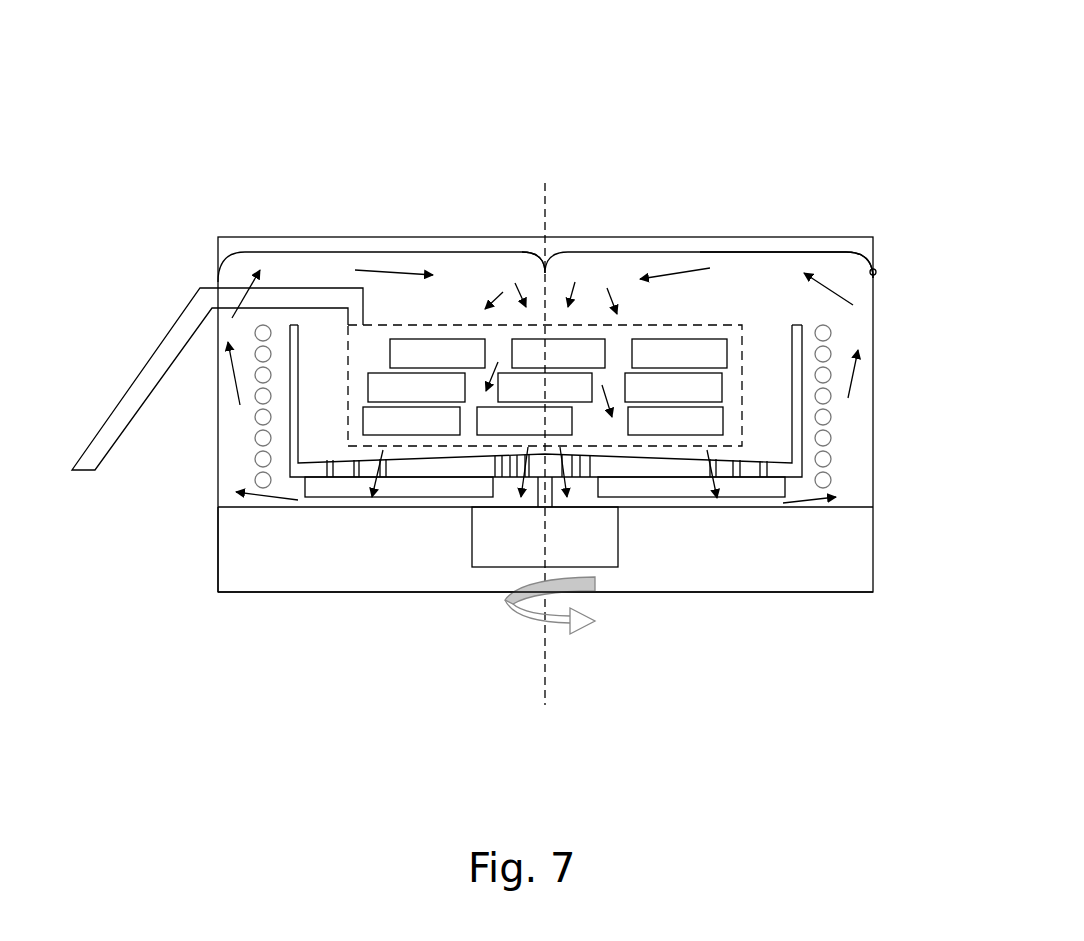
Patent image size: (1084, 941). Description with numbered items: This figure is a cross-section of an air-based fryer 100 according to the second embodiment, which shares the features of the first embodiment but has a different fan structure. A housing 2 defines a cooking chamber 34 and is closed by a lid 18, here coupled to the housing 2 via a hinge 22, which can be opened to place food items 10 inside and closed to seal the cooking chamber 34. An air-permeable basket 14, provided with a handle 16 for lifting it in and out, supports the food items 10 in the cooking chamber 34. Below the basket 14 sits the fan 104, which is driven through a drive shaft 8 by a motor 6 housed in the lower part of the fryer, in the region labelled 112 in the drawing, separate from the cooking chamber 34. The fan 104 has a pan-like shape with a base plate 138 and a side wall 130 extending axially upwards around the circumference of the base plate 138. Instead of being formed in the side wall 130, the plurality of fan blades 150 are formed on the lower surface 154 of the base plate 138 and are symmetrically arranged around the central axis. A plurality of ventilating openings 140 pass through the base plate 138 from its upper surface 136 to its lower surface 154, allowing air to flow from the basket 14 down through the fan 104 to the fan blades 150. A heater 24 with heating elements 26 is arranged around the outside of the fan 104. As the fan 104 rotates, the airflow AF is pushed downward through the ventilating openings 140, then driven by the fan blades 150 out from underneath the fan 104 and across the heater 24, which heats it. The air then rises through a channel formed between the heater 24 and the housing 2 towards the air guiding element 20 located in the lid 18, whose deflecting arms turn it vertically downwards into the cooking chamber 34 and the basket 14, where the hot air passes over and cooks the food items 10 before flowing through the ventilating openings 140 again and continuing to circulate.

The air-based fryer 100 is at (290, 98).
The housing 2 is at (873, 357).
The motor 6 is at (602, 568).
The drive shaft 8 is at (545, 492).
The food items 10 is at (685, 357).
The basket 14 is at (580, 322).
The handle 16 is at (155, 350).
The lid 18 is at (238, 237).
The air guiding element 20 is at (510, 237).
The hinge 22 is at (873, 272).
The heater 24 is at (830, 453).
The heating element 26 is at (823, 420).
The cooking chamber 34 is at (772, 283).
The fan 104 is at (308, 563).
The base wall 112 is at (243, 563).
The side wall 130 is at (287, 418).
The upper surface 136 is at (400, 458).
The base plate 138 is at (457, 465).
The ventilating openings 140 is at (740, 470).
The fan blades 150 is at (663, 497).
The lower surface 154 is at (425, 463).
The airflow AF is at (235, 380).